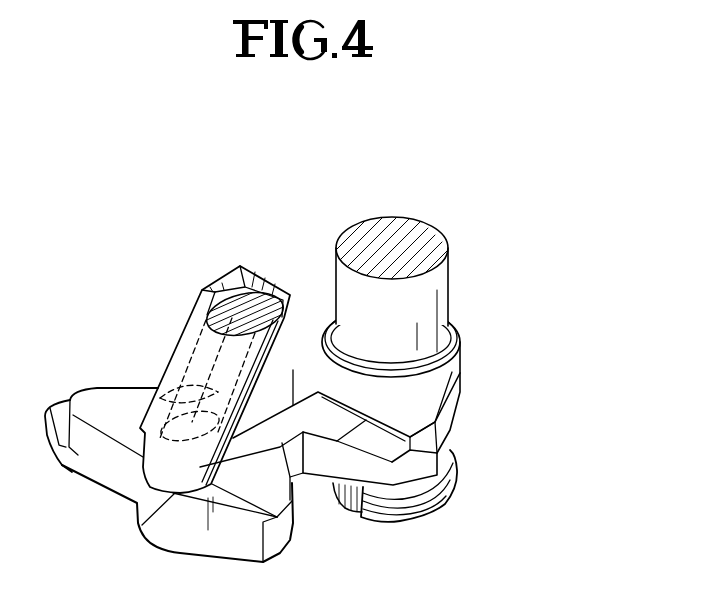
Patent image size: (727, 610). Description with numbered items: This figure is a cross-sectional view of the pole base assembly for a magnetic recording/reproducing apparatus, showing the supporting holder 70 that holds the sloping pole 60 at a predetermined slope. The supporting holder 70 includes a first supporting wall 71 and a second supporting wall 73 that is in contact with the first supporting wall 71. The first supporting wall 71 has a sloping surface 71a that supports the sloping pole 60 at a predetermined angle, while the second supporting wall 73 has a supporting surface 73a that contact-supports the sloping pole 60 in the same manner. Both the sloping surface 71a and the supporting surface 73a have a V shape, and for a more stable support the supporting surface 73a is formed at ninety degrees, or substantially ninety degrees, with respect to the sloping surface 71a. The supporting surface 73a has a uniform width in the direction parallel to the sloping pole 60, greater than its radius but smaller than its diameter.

The supporting holder 70 is at (196, 281).
The first supporting wall 71 is at (285, 294).
The sloping surface 71a is at (165, 382).
The second supporting wall 73 is at (231, 288).
The supporting surface 73a is at (202, 362).
The sloping pole 60 is at (253, 303).